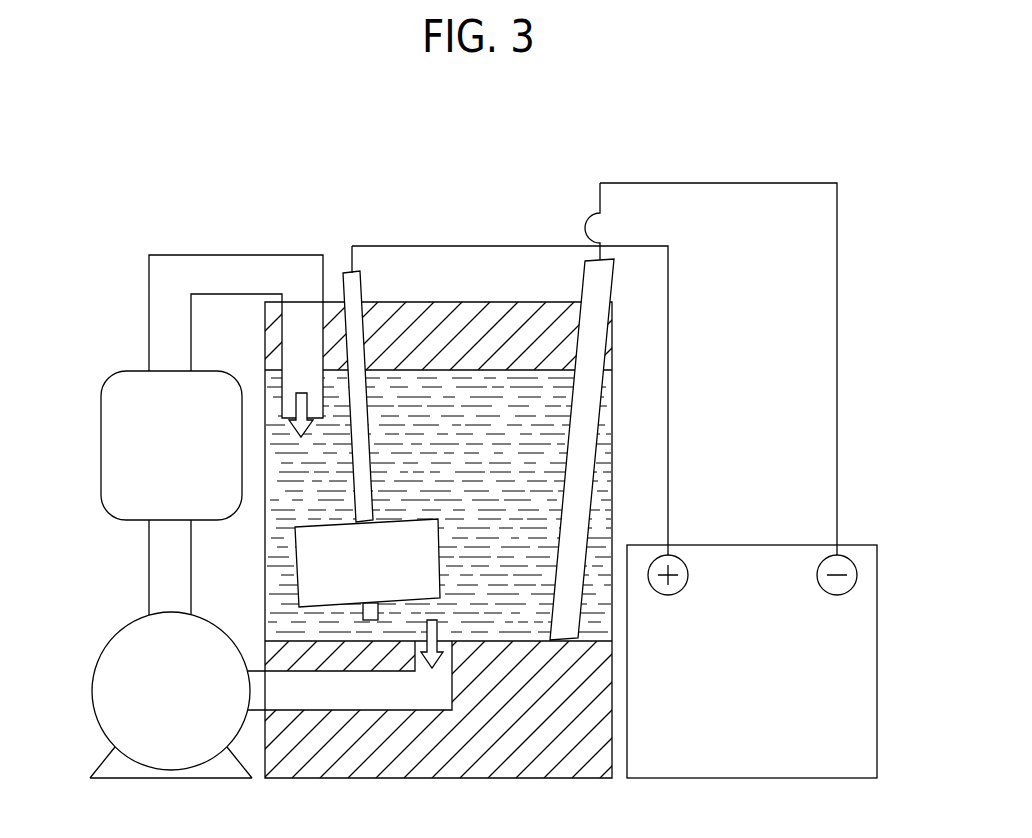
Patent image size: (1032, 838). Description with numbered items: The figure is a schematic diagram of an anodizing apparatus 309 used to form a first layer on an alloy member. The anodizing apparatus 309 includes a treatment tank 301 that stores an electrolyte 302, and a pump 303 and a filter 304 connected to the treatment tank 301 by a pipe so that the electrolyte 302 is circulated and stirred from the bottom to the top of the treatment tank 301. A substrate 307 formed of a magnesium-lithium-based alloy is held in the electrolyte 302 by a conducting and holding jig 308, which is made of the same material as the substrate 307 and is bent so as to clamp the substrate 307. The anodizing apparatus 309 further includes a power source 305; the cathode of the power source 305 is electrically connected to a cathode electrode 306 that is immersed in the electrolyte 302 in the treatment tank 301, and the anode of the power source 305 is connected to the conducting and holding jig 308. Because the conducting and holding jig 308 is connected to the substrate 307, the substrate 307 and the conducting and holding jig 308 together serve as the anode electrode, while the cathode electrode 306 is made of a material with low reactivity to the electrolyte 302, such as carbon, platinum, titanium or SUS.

The treatment tank 301 is at (425, 302).
The electrolyte 302 is at (487, 383).
The pump 303 is at (103, 681).
The filter 304 is at (114, 459).
The power source 305 is at (838, 643).
The cathode electrode 306 is at (604, 285).
The substrate 307 is at (318, 548).
The conducting and holding jig 308 is at (352, 290).
The anodizing apparatus 309 is at (466, 106).